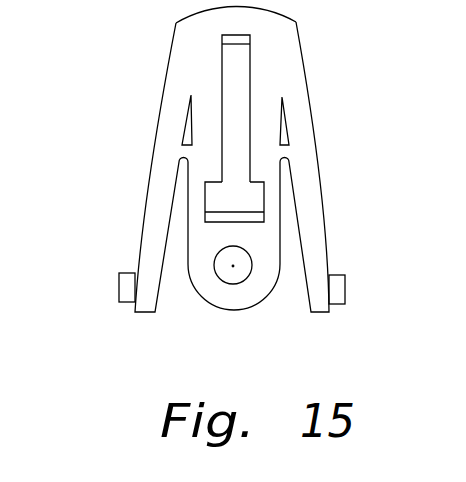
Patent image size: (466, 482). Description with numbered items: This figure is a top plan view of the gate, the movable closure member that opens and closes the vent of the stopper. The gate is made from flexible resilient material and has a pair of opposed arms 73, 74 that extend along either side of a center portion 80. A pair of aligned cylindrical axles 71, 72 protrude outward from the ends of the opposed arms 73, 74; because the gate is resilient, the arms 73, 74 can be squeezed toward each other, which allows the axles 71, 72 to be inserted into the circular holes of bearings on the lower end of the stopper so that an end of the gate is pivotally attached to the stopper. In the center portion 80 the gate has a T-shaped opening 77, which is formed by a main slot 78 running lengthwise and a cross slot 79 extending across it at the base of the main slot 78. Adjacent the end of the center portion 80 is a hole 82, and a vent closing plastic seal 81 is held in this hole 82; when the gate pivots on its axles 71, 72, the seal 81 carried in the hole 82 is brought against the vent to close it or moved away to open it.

The axle 71 is at (345, 286).
The axle 72 is at (119, 284).
The arm 73 is at (327, 240).
The arm 74 is at (150, 183).
The T-shaped opening 77 is at (263, 107).
The main slot 78 is at (234, 82).
The cross slot 79 is at (246, 202).
The center portion 80 is at (270, 297).
The vent closing plastic seal 81 is at (233, 268).
The hole 82 is at (218, 280).